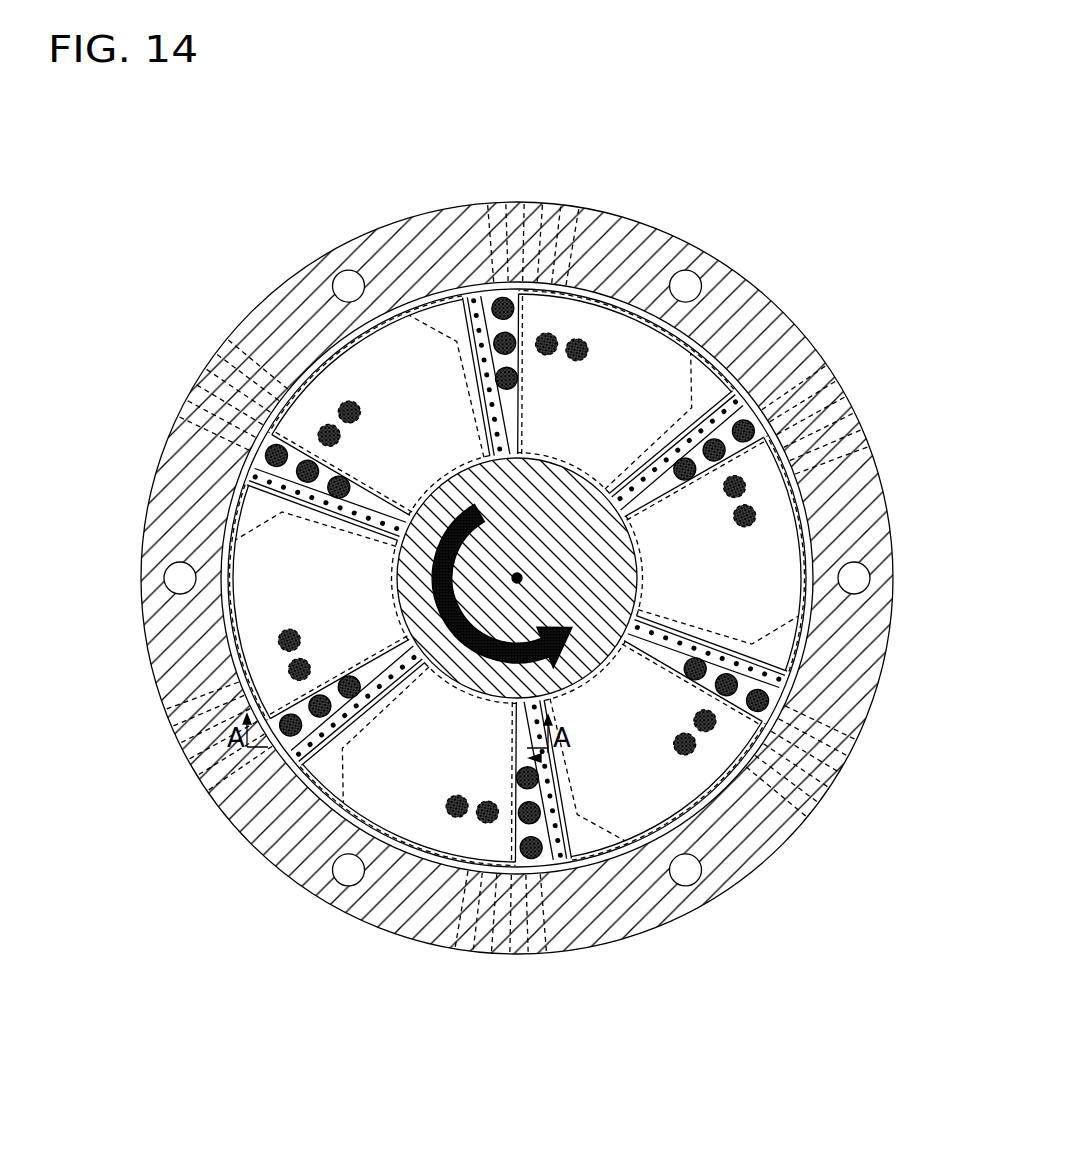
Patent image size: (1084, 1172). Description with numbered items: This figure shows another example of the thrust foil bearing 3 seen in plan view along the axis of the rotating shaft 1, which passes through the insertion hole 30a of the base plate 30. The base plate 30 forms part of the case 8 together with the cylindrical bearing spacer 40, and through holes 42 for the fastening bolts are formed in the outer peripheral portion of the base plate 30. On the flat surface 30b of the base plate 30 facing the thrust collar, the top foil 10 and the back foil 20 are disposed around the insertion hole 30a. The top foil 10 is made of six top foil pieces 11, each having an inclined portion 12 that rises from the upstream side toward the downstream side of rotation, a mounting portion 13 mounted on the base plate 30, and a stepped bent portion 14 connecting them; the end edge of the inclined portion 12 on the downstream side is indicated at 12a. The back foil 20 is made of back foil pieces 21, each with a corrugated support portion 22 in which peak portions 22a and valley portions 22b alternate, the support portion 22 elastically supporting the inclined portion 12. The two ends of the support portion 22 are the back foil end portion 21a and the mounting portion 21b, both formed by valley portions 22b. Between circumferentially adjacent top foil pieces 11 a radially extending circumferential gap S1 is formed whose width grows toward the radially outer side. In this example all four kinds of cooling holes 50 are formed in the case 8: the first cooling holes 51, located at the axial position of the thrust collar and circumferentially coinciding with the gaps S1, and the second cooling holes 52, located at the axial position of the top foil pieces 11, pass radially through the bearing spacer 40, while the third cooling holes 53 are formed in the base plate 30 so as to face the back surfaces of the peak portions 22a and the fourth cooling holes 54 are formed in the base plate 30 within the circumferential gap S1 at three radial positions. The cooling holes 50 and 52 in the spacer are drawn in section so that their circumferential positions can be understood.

The rotating shaft 1 is at (457, 493).
The thrust foil bearing 3 is at (486, 543).
The case 8 is at (486, 578).
The top foil 10 is at (517, 677).
The top foil piece 11 is at (517, 677).
The inclined portion 12 is at (442, 883).
The tooth tip 12a is at (553, 760).
The mounting portion 13 is at (268, 760).
The bent portion 14 is at (323, 745).
The back foil 20 is at (431, 831).
The back foil piece 21 is at (431, 831).
The back foil end portion 21a is at (320, 793).
The mounting portion 21b is at (583, 765).
The support portion 22 is at (366, 853).
The peak portion 22a is at (369, 831).
The valley portion 22b is at (395, 790).
The base plate 30 is at (540, 554).
The insertion hole 30a is at (605, 638).
The flat surface 30b is at (742, 696).
The bearing spacer 40 is at (160, 690).
The through hole 42 is at (180, 580).
The cooling hole 50 is at (611, 663).
The first cooling hole 51 is at (533, 826).
The second cooling hole 52 is at (487, 824).
The third cooling hole 53 is at (585, 340).
The fourth cooling hole 54 is at (750, 422).
The circumferential gap S1 is at (541, 758).